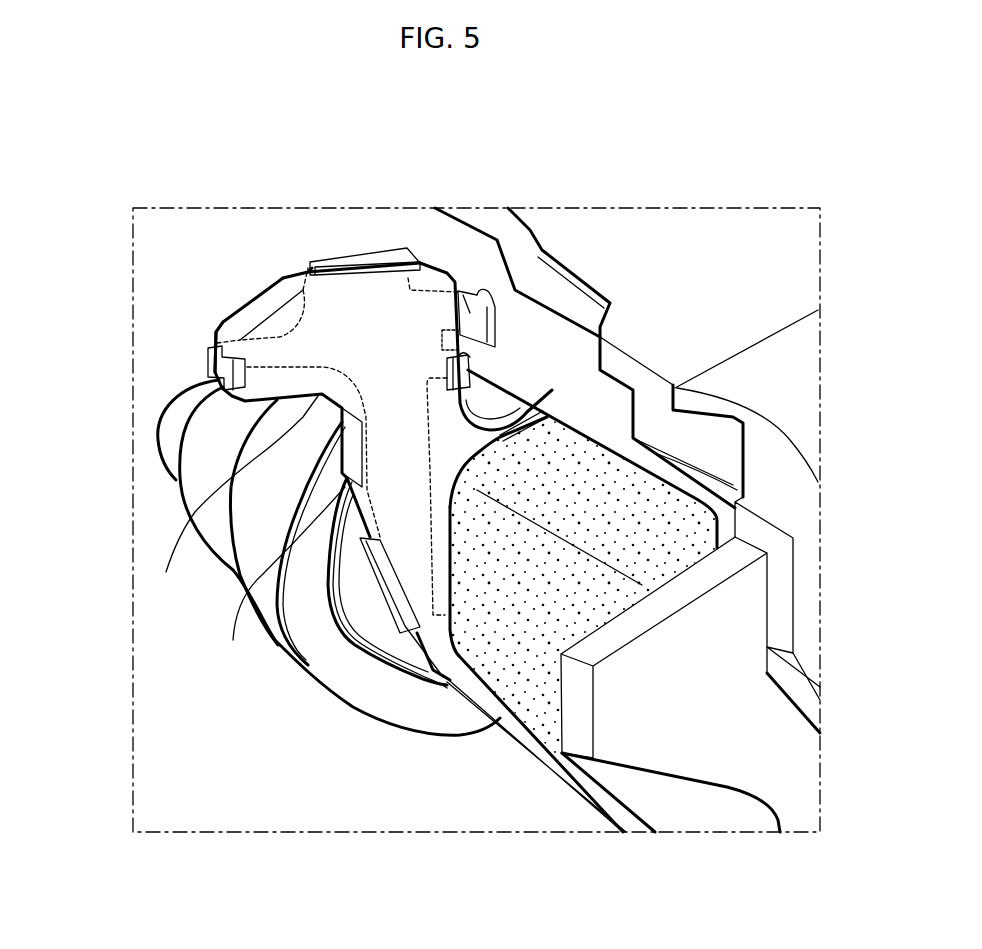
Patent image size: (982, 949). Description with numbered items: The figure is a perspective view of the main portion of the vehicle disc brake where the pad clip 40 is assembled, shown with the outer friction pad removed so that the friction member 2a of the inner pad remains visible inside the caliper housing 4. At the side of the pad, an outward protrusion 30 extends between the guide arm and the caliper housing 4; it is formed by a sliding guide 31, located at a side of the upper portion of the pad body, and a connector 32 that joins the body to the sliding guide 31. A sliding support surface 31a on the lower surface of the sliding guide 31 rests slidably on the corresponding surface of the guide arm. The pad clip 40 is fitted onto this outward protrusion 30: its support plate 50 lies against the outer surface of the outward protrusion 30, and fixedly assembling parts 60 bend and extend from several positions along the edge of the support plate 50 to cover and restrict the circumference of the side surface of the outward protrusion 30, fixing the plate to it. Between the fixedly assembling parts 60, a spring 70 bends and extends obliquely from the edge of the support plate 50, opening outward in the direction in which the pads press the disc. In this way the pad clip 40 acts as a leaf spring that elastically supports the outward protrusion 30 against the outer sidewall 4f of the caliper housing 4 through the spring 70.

The friction member 2a is at (528, 687).
The caliper housing 4 is at (716, 237).
The outer sidewall 4f is at (538, 335).
The outward protrusion 30 is at (236, 294).
The sliding guide 31 is at (226, 329).
The sliding support surface 31a is at (273, 404).
The connector 32 is at (246, 599).
The pad clip 40 is at (325, 244).
The support plate 50 is at (230, 490).
The fixedly assembling parts 60 is at (378, 258).
The spring 70 is at (470, 315).